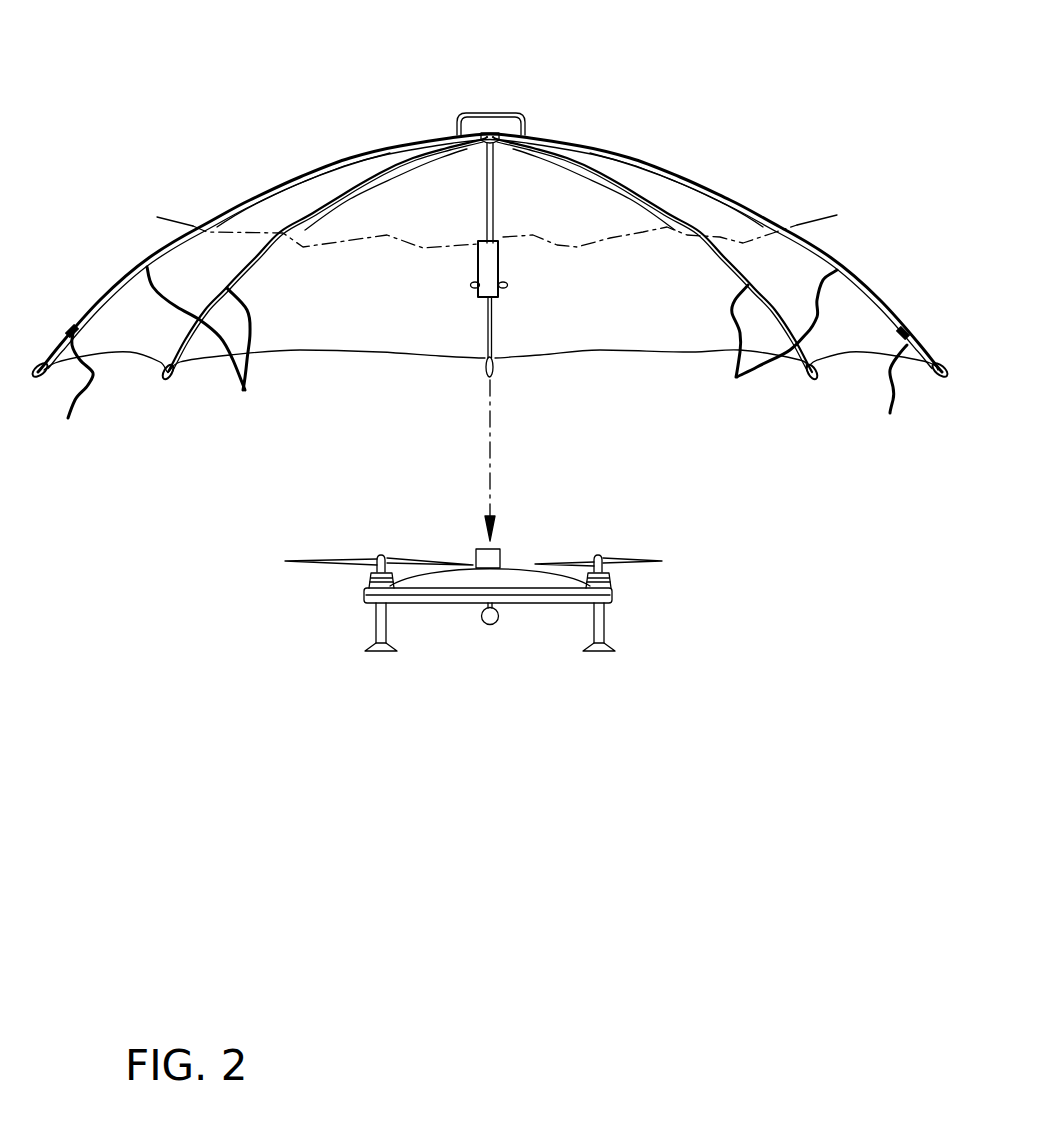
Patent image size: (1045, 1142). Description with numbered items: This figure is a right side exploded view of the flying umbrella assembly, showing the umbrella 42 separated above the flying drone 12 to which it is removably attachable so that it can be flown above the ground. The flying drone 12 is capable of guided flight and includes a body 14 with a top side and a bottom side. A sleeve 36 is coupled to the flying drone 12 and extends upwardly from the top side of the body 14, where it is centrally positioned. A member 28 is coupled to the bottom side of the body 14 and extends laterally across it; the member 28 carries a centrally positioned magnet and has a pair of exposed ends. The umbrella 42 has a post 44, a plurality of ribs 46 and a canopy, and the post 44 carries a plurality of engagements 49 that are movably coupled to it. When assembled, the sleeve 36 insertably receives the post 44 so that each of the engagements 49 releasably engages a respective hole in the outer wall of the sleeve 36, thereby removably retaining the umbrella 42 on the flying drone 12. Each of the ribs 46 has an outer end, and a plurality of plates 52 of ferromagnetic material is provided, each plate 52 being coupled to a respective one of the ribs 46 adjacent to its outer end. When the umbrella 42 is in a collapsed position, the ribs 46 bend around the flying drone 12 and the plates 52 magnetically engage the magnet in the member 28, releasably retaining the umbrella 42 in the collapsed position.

The flying drone 12 is at (473, 619).
The body 14 is at (547, 590).
The member 28 is at (489, 625).
The sleeve 36 is at (504, 556).
The umbrella 42 is at (490, 273).
The post 44 is at (477, 255).
The ribs 46 is at (492, 348).
The engagements 49 is at (475, 285).
The plates 52 is at (482, 396).